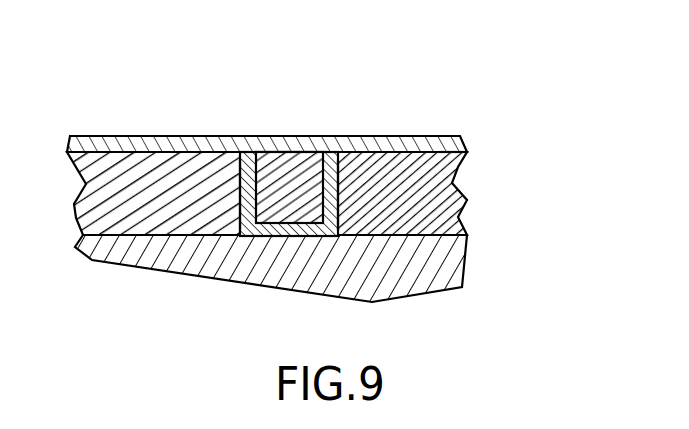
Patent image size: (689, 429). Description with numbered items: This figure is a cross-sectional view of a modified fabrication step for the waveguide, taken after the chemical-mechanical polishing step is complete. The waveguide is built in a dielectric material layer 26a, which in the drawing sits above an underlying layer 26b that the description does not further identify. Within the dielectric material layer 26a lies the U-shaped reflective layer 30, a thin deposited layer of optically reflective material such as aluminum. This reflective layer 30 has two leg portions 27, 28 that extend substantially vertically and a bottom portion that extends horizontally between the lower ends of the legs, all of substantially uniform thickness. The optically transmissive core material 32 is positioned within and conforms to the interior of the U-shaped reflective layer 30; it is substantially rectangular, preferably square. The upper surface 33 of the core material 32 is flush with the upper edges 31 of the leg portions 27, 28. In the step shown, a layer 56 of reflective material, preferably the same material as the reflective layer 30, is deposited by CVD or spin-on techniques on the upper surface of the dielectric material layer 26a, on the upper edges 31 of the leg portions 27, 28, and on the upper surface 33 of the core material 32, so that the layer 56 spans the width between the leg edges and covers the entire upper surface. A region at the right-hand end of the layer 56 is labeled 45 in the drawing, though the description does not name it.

The dielectric material layer 26a is at (440, 179).
The lower body portion 26b is at (455, 264).
The leg portion 27 is at (246, 194).
The leg portion 28 is at (350, 199).
The U-shaped reflective layer 30 is at (222, 220).
The upper edges 31 is at (253, 155).
The core material 32 is at (289, 185).
The upper surface 33 is at (310, 155).
The edge of top layer 45 is at (446, 152).
The layer of reflective material 56 is at (467, 147).